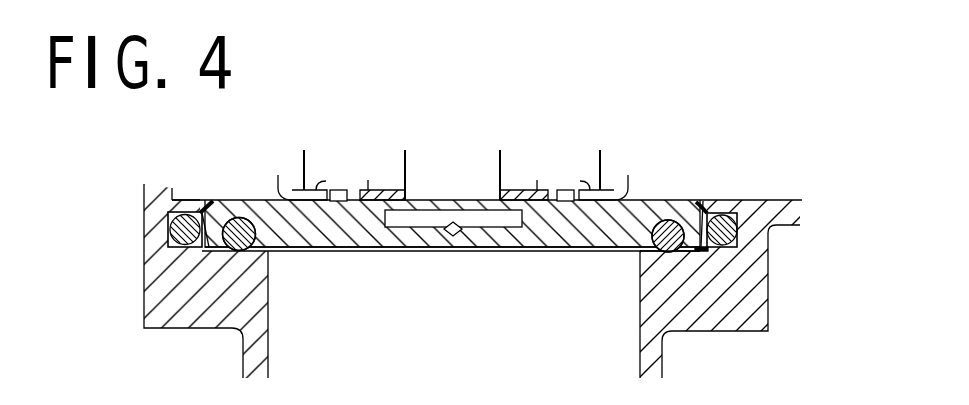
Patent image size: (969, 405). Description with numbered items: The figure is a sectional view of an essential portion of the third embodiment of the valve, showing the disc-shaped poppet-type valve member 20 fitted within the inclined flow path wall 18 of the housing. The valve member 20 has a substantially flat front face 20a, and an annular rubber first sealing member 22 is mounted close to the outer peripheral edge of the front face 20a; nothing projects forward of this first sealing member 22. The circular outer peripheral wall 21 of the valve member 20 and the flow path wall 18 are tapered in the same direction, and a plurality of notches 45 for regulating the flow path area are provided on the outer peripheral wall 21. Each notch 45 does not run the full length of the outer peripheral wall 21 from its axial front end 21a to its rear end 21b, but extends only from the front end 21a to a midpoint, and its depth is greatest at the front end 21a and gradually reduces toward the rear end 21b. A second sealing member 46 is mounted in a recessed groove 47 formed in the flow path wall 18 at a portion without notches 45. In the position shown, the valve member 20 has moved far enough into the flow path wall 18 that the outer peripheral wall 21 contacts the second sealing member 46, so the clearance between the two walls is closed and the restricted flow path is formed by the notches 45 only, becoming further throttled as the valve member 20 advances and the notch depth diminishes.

The flow path wall 18 is at (224, 213).
The valve member 20 is at (565, 226).
The front face 20a is at (540, 248).
The outer peripheral wall 21 is at (732, 212).
The front end 21a is at (704, 249).
The rear end 21b is at (690, 202).
The first sealing member 22 is at (663, 221).
The notch 45 is at (708, 250).
The second sealing member 46 is at (175, 250).
The recessed groove 47 is at (168, 228).